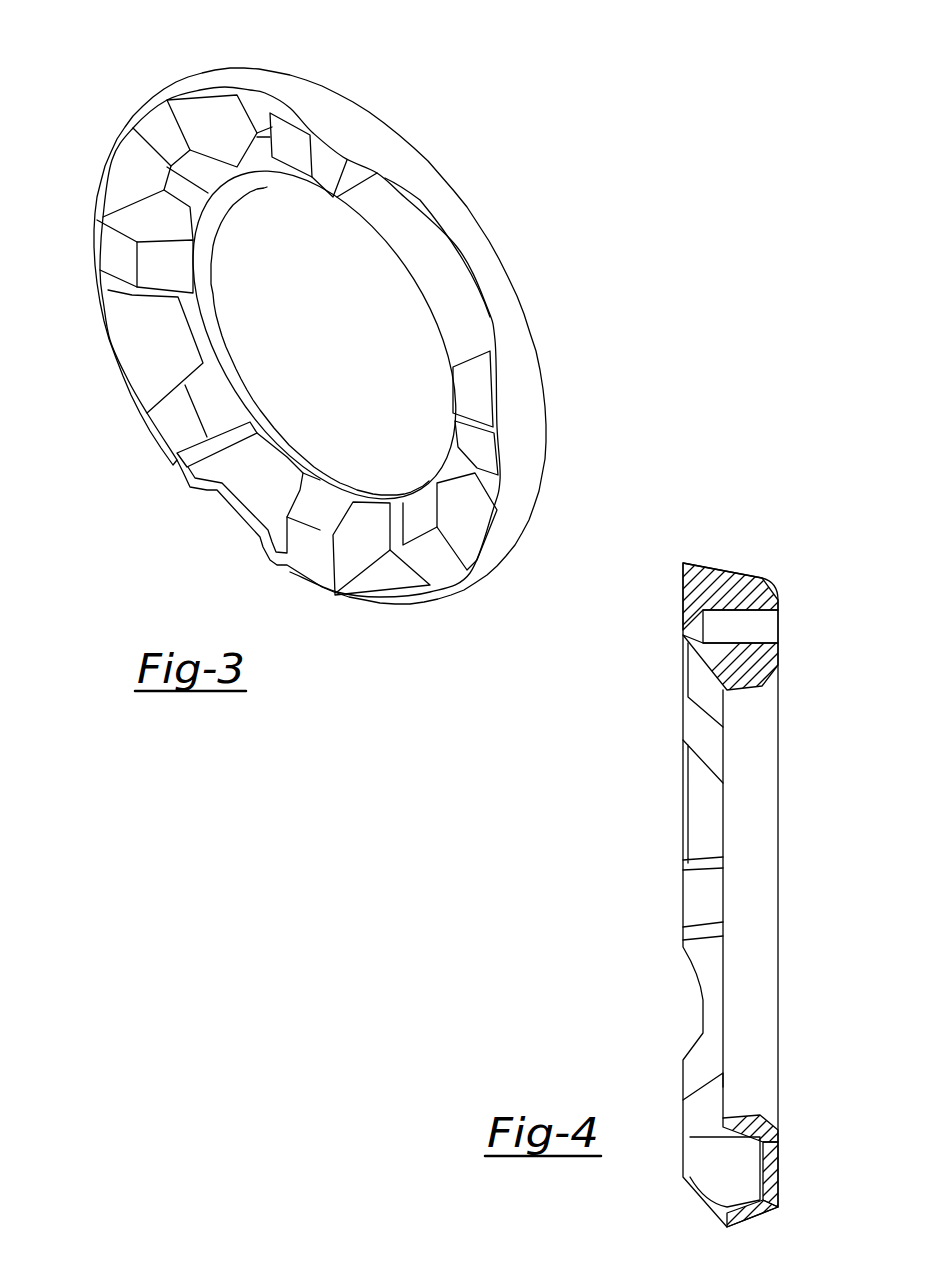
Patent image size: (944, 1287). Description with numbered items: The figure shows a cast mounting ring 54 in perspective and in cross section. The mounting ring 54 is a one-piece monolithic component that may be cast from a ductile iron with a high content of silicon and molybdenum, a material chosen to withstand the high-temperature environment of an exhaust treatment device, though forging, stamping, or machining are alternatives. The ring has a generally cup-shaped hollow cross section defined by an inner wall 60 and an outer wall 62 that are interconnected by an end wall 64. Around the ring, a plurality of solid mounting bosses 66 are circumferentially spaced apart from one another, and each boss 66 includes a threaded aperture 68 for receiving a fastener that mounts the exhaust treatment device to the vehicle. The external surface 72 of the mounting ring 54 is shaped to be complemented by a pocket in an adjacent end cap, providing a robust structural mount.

In FIG. 3, the mounting ring 54 is at (390, 108).
In FIG. 3, the inner wall 60 is at (259, 158).
In FIG. 4, the inner wall 60 is at (757, 1128).
In FIG. 3, the outer wall 62 is at (220, 98).
In FIG. 4, the outer wall 62 is at (745, 1220).
In FIG. 3, the end wall 64 is at (258, 115).
In FIG. 4, the end wall 64 is at (775, 1180).
In FIG. 3, the solid mounting boss 66 is at (115, 256).
In FIG. 4, the solid mounting boss 66 is at (727, 582).
In FIG. 4, the threaded aperture 68 is at (765, 622).
In FIG. 3, the external surface 72 is at (257, 388).
In FIG. 4, the external surface 72 is at (760, 734).